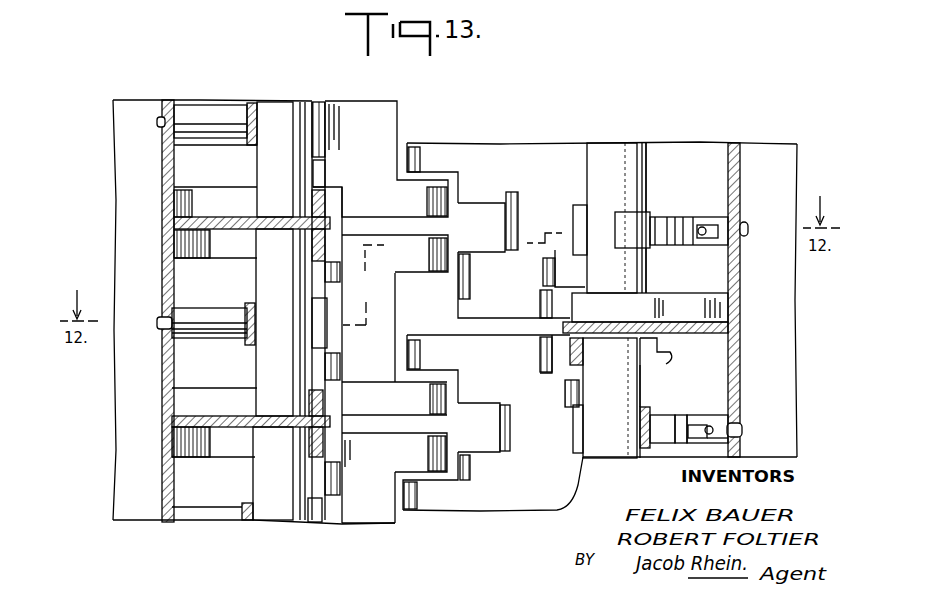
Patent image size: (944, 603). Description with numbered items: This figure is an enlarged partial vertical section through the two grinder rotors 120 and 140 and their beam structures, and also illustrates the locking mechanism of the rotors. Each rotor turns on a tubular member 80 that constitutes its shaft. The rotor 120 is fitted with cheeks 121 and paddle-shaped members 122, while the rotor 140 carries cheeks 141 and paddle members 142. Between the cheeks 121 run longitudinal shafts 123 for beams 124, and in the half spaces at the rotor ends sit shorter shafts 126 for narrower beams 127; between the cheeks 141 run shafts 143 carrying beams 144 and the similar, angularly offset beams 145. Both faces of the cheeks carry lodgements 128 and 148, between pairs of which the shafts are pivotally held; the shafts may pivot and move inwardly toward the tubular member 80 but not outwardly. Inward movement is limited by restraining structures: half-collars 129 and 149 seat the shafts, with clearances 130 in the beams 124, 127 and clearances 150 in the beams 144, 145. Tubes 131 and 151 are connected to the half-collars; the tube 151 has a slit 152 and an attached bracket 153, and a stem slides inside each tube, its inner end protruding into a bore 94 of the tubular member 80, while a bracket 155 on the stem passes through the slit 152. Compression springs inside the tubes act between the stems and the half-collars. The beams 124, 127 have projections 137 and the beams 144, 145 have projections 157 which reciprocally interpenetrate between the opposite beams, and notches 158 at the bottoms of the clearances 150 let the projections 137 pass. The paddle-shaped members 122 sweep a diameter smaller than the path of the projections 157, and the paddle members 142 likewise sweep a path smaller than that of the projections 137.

The tubular member 80 is at (163, 461).
The bore 94 is at (158, 322).
The grinder rotor 120 is at (306, 79).
The cheek 121 is at (211, 217).
The paddle-shaped member 122 is at (201, 173).
The longitudinal shaft 123 is at (268, 108).
The beam 124 is at (373, 114).
The shorter shaft 126 is at (280, 497).
The narrower beam 127 is at (367, 511).
The lodgement 128 is at (187, 242).
The half-collar 129 is at (249, 345).
The clearance 130 is at (320, 110).
The tube 131 is at (210, 320).
The projection 137 is at (413, 190).
The grinder rotor 140 is at (572, 117).
The cheek 141 is at (670, 322).
The paddle member 142 is at (688, 158).
The shaft 143 is at (612, 156).
The beam 144 is at (490, 502).
The beam 145 is at (510, 157).
The lodgement 148 is at (712, 322).
The half-collar 149 is at (640, 222).
The clearance 150 is at (582, 210).
The tube 151 is at (665, 434).
The slit 152 is at (704, 440).
The bracket 153 is at (677, 420).
The bracket 155 is at (710, 426).
The projection 157 is at (443, 158).
The notch 158 is at (503, 238).